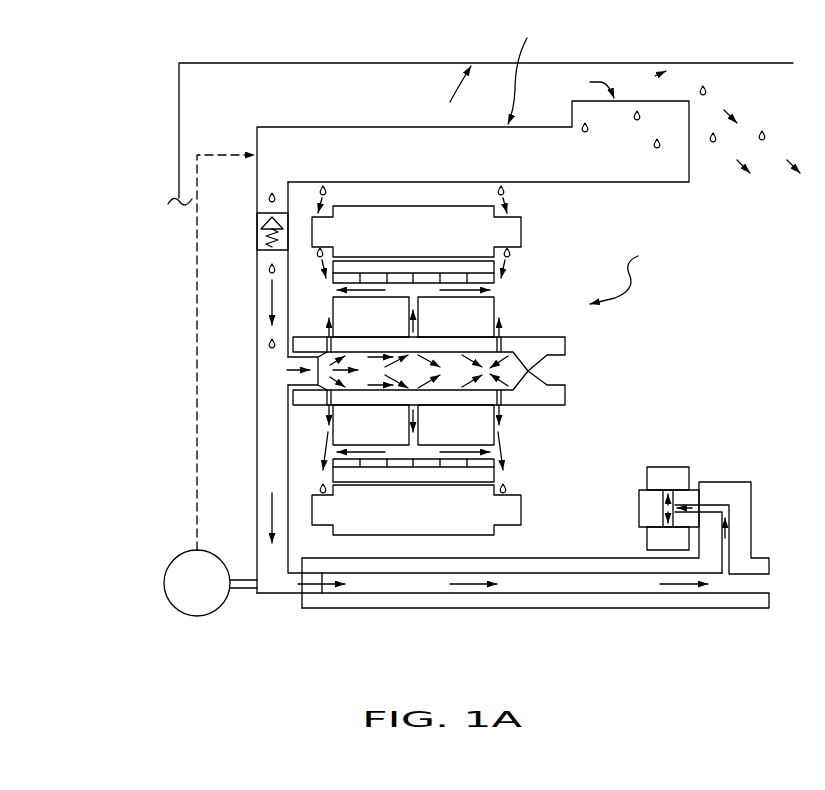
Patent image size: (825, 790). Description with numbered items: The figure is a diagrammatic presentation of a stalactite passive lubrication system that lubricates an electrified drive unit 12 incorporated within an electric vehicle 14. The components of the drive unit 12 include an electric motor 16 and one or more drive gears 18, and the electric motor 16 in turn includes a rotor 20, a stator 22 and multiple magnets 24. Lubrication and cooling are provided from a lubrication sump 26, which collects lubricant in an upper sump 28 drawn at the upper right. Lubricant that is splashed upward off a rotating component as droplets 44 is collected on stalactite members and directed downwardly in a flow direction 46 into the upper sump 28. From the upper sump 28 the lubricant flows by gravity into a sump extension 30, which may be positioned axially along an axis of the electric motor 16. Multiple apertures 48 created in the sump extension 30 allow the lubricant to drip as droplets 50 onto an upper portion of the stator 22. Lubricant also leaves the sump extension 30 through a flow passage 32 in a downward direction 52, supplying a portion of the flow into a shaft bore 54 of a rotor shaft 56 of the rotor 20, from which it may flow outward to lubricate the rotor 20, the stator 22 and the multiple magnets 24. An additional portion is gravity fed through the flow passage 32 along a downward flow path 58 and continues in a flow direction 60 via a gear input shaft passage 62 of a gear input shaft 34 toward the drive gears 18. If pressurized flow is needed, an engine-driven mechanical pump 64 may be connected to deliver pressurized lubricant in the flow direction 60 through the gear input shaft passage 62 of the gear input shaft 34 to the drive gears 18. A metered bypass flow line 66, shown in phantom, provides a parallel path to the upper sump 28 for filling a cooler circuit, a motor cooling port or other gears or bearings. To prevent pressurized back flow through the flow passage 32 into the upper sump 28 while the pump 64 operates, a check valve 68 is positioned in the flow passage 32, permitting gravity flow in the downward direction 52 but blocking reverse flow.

The electrified drive unit 12 is at (444, 93).
The electric vehicle 14 is at (150, 94).
The electric motor 16 is at (629, 273).
The drive gears 18 is at (665, 476).
The rotor 20 is at (485, 320).
The stator 22 is at (517, 228).
The multiple magnets 24 is at (490, 278).
The lubrication sump 26 is at (533, 75).
The upper sump 28 is at (645, 170).
The sump extension 30 is at (307, 140).
The flow passage 32 is at (262, 277).
The gear input shaft 34 is at (547, 563).
The droplets 44 is at (708, 91).
The flow direction 46 is at (588, 84).
The apertures 48 is at (329, 189).
The droplets 50 is at (510, 192).
The downward direction 52 is at (270, 318).
The shaft bore 54 is at (530, 371).
The rotor shaft 56 is at (565, 345).
The downward flow path 58 is at (265, 520).
The flow direction 60 is at (468, 585).
The gear input shaft passage 62 is at (555, 582).
The engine-driven mechanical pump 64 is at (214, 596).
The metered bypass flow line 66 is at (197, 265).
The check valve 68 is at (262, 230).